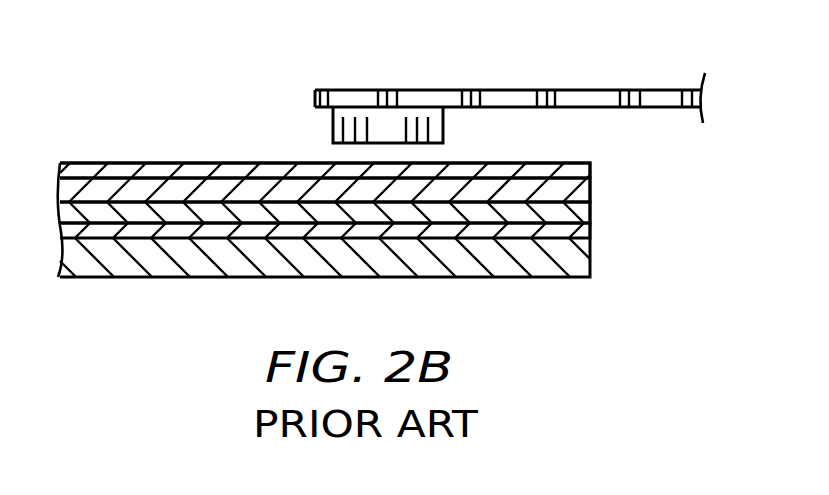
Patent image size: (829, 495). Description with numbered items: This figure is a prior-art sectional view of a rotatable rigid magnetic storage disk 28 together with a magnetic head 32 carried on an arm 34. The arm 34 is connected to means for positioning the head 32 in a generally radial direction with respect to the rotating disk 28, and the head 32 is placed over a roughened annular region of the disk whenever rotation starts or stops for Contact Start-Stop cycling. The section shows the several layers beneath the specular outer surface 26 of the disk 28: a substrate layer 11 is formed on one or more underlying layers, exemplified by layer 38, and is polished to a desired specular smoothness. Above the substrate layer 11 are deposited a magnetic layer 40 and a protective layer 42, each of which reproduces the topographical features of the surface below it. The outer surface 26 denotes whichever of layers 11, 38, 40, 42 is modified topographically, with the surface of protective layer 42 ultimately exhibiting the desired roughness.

The specular outer surface 26 is at (110, 163).
The magnetic storage disk 28 is at (180, 330).
The magnetic head 32 is at (343, 127).
The arm 34 is at (565, 90).
The protective layer 42 is at (590, 166).
The magnetic layer 40 is at (590, 185).
The substrate layer 11 is at (590, 208).
The underlying layer 38 is at (590, 230).